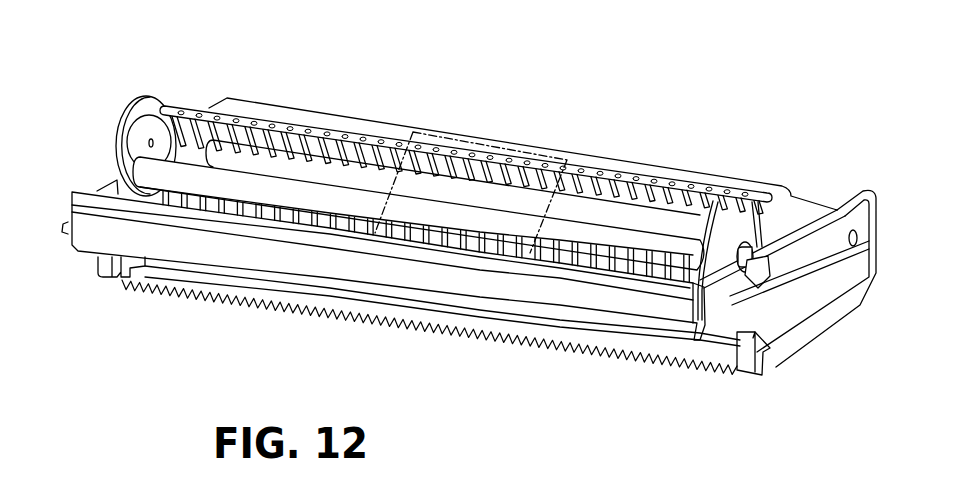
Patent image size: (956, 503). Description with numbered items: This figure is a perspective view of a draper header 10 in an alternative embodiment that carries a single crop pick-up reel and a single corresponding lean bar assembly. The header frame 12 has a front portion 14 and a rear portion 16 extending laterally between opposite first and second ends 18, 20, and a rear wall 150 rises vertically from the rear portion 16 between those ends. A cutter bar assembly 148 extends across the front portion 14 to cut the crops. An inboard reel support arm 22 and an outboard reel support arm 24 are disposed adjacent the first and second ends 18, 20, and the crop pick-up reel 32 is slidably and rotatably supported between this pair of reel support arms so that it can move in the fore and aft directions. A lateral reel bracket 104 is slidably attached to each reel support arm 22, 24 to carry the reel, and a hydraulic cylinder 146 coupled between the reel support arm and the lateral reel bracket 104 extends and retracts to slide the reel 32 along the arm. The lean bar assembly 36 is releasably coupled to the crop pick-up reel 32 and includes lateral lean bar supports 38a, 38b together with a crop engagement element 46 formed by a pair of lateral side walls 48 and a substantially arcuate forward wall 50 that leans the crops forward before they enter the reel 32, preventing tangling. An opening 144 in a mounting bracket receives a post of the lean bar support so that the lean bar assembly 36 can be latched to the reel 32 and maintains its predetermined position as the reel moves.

The draper header 10 is at (327, 60).
The header frame 12 is at (737, 182).
The front portion 14 is at (743, 376).
The rear portion 16 is at (772, 214).
The first end 18 is at (770, 350).
The second end 20 is at (100, 277).
The inboard reel support arm 22 is at (846, 201).
The outboard reel support arm 24 is at (174, 137).
The first crop pick-up reel 32 is at (143, 117).
The lean bar assembly 36 is at (666, 344).
The lateral lean bar support 38a is at (64, 227).
The lateral lean bar support 38b is at (729, 316).
The crop engagement element 46 is at (542, 314).
The lateral side walls 48 is at (729, 301).
The arcuate forward wall 50 is at (490, 289).
The lateral reel bracket 104 is at (765, 279).
The opening 144 is at (486, 134).
The hydraulic cylinder 146 is at (781, 238).
The cutter bar assembly 148 is at (589, 368).
The rear wall 150 is at (641, 165).